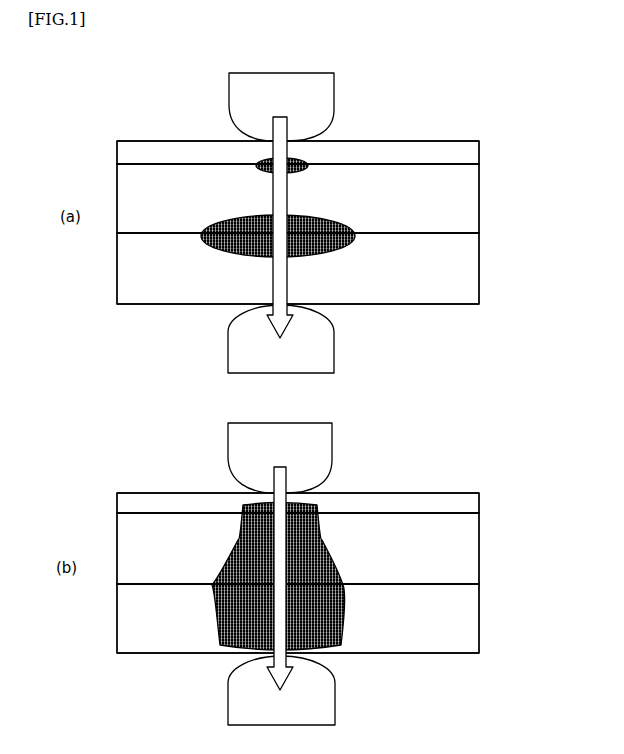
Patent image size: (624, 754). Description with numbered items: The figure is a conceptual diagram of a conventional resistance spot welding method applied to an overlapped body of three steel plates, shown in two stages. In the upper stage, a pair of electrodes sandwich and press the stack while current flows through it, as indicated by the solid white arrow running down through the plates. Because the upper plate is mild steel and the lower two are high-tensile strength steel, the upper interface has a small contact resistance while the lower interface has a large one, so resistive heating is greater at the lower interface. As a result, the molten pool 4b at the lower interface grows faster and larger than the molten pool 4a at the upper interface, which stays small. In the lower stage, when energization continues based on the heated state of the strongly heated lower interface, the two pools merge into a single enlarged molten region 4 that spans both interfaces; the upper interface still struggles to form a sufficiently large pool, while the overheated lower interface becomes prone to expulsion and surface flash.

The merged weld (joined portion) 4 is at (238, 563).
The molten pool 4a is at (260, 160).
The molten pool 4b is at (227, 245).